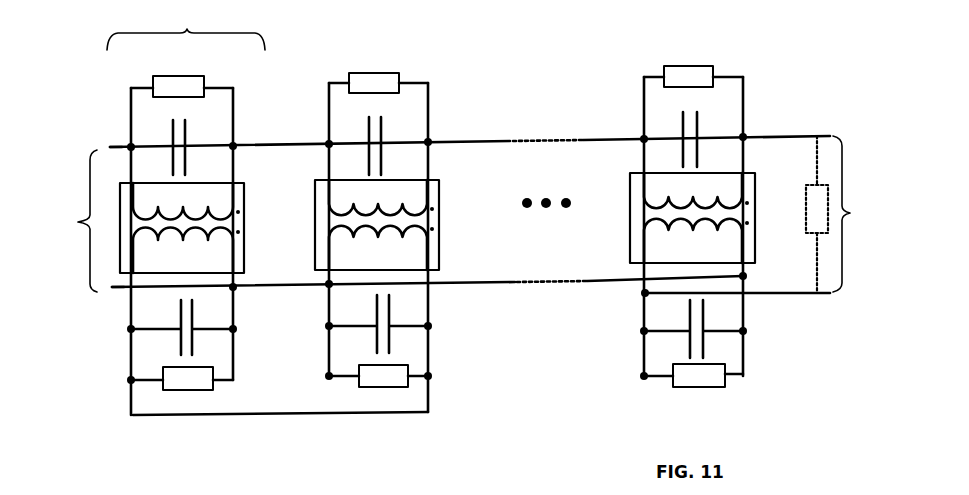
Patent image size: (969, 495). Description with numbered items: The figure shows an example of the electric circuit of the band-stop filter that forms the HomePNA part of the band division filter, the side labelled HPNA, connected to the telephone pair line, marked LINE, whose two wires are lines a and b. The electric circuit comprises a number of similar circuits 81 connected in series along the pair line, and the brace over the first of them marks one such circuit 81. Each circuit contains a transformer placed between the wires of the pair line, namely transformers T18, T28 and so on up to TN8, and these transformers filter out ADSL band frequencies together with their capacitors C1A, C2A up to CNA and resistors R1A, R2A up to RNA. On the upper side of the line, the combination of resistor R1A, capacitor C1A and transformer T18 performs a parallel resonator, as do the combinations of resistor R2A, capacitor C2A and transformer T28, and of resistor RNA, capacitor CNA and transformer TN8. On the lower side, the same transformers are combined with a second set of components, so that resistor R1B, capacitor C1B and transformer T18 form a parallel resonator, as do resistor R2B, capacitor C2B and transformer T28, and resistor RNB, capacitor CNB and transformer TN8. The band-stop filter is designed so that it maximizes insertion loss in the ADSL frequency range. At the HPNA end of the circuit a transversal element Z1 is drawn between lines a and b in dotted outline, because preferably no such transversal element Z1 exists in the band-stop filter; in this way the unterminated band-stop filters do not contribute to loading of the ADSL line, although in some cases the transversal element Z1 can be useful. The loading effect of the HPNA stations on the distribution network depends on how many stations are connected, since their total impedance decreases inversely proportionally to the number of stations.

The similar circuit 81 is at (186, 29).
The line a is at (109, 153).
The line b is at (111, 292).
The telephone line LINE is at (64, 221).
The resistor R1A is at (192, 77).
The capacitor C1A is at (187, 147).
The transformer T18 is at (246, 212).
The capacitor C1B is at (190, 326).
The resistor R1B is at (197, 390).
The resistor R2A is at (385, 73).
The capacitor C2A is at (383, 143).
The transformer T28 is at (440, 204).
The capacitor C2B is at (386, 326).
The resistor R2B is at (375, 387).
The resistor RNA is at (691, 66).
The capacitor CNA is at (692, 137).
The transformer TN8 is at (750, 198).
The capacitor CNB is at (700, 331).
The resistor RNB is at (693, 388).
The transversal element Z1 is at (806, 217).
The HomePNA part HPNA is at (867, 214).